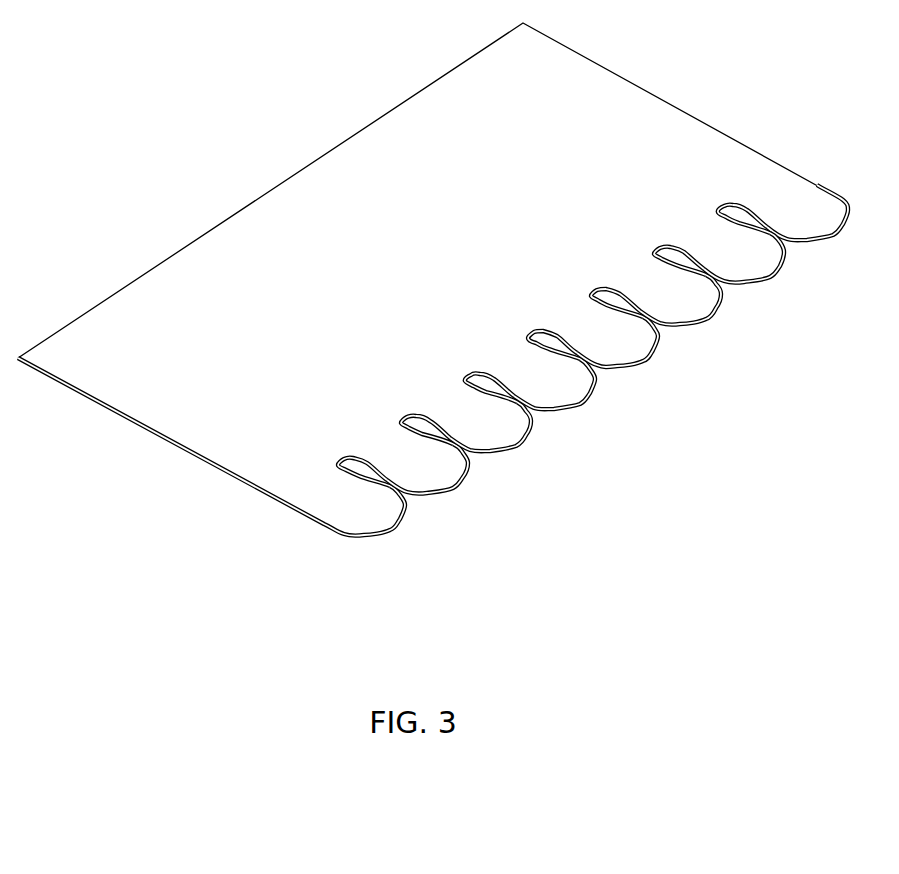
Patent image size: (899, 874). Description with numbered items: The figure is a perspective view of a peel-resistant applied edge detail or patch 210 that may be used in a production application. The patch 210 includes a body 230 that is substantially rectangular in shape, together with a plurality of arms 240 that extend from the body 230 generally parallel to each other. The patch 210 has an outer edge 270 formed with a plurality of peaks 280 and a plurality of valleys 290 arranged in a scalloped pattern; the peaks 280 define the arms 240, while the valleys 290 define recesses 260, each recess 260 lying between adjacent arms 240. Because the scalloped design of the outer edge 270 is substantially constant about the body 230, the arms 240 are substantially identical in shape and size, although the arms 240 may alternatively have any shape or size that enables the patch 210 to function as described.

The patch 210 is at (433, 312).
The body 230 is at (399, 255).
The arms 240 is at (630, 347).
The recesses 260 is at (606, 296).
The outer edge 270 is at (385, 533).
The peaks 280 is at (468, 493).
The valleys 290 is at (345, 453).